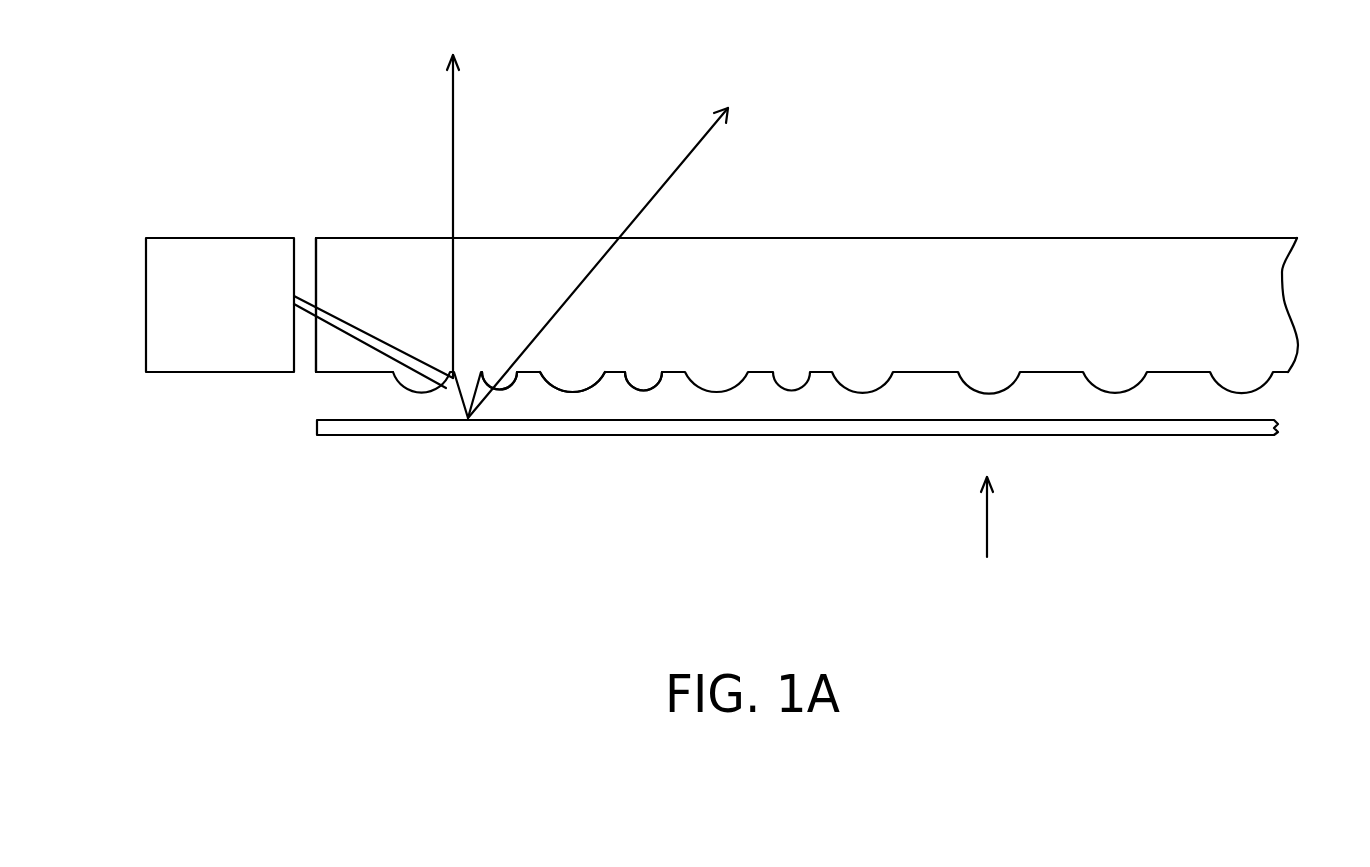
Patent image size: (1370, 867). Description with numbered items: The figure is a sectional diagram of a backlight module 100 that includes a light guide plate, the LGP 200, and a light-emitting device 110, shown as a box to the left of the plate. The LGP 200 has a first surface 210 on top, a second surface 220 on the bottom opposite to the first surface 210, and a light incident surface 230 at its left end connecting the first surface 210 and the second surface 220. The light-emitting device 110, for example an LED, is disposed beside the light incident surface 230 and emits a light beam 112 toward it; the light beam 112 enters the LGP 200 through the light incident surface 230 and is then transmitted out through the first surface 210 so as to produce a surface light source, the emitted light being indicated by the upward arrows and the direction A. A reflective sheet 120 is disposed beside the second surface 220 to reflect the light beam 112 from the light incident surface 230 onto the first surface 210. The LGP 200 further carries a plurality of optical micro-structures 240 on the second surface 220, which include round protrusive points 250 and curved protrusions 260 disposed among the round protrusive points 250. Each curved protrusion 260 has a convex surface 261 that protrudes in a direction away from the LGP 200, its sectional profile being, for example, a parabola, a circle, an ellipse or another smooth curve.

The backlight module 100 is at (1341, 583).
The light-emitting device 110 is at (172, 320).
The light beam 112 is at (453, 138).
The reflective sheet 120 is at (1237, 428).
The LGP 200 is at (1250, 304).
The first surface 210 is at (363, 236).
The second surface 220 is at (366, 375).
The light incident surface 230 is at (314, 270).
The optical micro-structures 240 is at (600, 474).
The round protrusive point 250 is at (577, 378).
The curved protrusion 260 is at (647, 383).
The convex surface 261 is at (509, 388).
The light emitting direction A is at (987, 518).